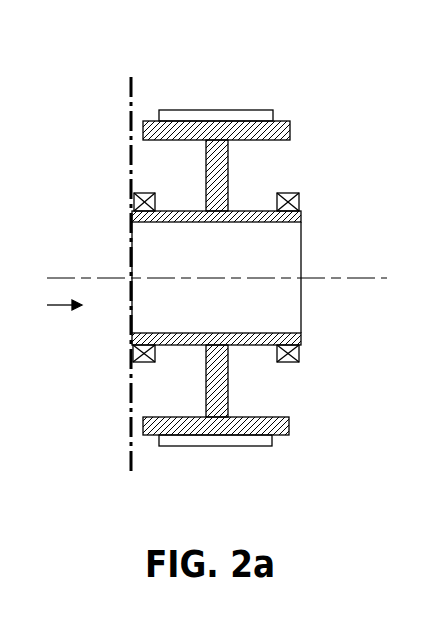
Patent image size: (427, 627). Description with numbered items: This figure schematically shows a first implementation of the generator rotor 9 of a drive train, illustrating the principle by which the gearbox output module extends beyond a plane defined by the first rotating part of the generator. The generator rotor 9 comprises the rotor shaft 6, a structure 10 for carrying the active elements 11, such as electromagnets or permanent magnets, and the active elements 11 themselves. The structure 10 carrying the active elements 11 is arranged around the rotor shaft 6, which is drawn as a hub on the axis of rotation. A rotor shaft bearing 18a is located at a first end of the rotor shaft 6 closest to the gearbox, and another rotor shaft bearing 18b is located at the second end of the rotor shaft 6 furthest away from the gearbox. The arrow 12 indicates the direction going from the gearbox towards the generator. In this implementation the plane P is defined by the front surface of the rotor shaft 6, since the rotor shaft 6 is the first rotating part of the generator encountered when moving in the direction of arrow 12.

The generator rotor 9 is at (222, 231).
The structure for carrying the active elements 10 is at (218, 180).
The active elements 11 is at (212, 119).
The rotor shaft 6 is at (303, 215).
The rotor shaft bearing 18a is at (136, 194).
The rotor shaft bearing 18b is at (297, 193).
The arrow 12 is at (60, 306).
The plane P is at (121, 273).